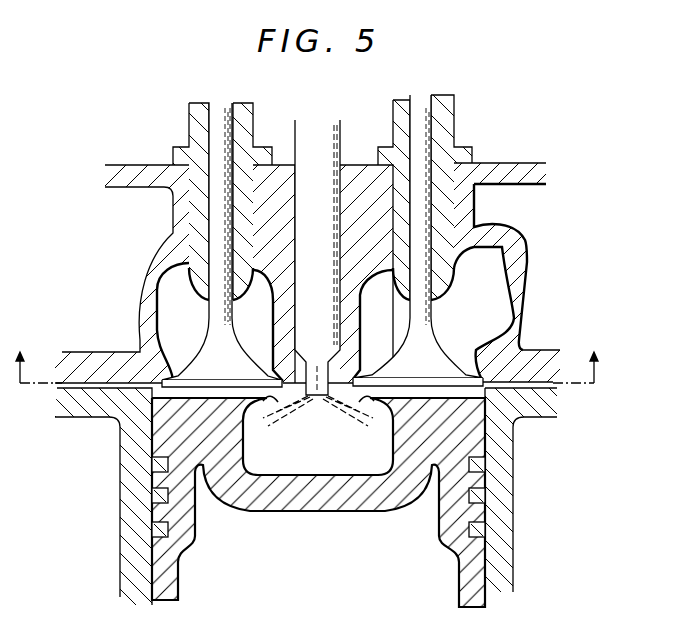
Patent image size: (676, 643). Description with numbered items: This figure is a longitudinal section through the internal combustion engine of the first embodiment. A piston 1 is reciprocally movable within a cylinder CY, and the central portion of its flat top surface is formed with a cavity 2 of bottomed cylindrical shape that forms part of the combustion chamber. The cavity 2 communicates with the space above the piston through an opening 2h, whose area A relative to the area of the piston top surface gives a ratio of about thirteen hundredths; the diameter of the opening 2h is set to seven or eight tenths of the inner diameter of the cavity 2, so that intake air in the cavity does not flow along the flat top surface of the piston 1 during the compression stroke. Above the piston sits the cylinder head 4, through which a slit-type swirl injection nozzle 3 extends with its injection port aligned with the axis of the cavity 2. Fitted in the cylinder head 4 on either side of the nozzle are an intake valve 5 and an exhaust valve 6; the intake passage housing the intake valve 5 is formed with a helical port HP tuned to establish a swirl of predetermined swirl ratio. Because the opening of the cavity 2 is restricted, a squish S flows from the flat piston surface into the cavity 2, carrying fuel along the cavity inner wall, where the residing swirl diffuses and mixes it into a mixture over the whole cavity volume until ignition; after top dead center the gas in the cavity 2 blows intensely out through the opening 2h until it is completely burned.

The piston 1 is at (413, 450).
The cavity 2 is at (316, 455).
The opening of the cavity 2h is at (242, 377).
The swirl injection nozzle 3 is at (322, 205).
The cylinder head 4 is at (500, 206).
The intake valve 5 is at (424, 323).
The exhaust valve 6 is at (218, 320).
The squish S is at (284, 402).
The helical port HP is at (489, 264).
The cylinder CY is at (135, 442).
The area of the opening A is at (305, 357).